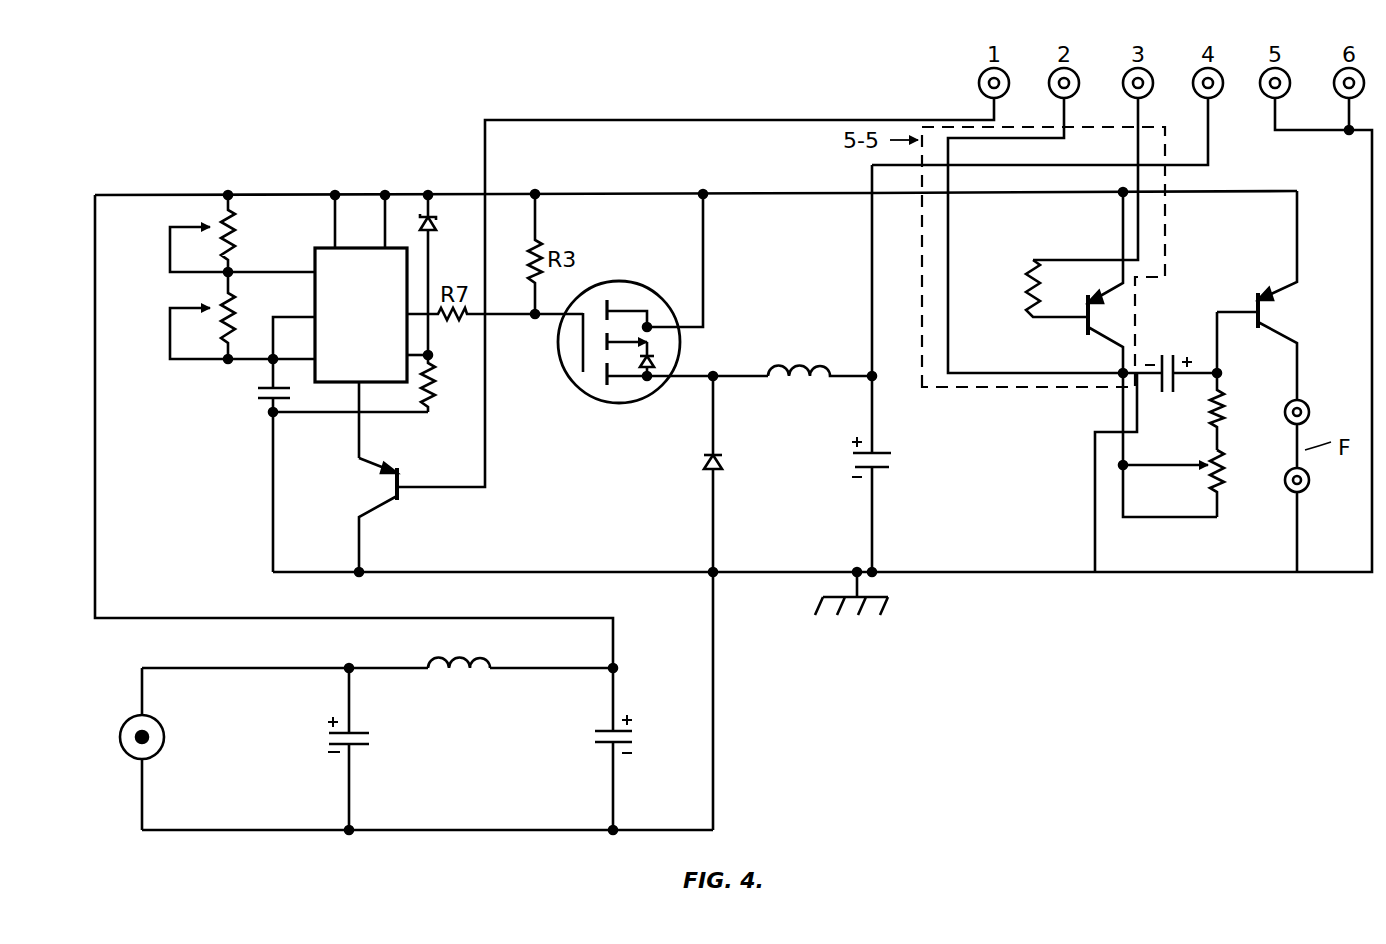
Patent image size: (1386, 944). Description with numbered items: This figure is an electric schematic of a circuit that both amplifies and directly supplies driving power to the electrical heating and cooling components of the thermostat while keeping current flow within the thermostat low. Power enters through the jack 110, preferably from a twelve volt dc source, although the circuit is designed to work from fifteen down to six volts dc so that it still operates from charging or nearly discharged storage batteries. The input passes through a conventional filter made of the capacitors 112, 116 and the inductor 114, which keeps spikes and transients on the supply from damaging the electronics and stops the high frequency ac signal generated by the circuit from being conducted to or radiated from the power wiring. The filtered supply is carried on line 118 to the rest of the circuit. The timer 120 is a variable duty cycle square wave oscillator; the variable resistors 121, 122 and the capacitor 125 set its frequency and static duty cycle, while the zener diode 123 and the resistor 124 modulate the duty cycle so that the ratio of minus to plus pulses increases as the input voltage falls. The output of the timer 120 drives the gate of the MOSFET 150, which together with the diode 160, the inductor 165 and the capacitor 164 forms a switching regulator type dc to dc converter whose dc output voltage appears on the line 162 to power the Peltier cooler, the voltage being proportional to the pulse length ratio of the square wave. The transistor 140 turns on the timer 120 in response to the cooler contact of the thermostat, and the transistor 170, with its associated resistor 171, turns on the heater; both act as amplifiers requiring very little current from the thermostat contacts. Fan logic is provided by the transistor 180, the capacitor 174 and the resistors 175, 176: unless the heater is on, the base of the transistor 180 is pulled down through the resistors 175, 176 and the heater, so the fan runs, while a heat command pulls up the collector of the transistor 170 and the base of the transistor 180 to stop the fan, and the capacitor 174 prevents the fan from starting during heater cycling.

The jack 110 is at (120, 745).
The capacitor 112 is at (335, 756).
The inductor 114 is at (456, 673).
The capacitor 116 is at (640, 736).
The supply line 118 is at (187, 196).
The timer 120 is at (361, 326).
The variable resistor 121 is at (170, 247).
The variable resistor 122 is at (165, 340).
The zener diode 123 is at (432, 233).
The resistor 124 is at (438, 406).
The capacitor 125 is at (263, 415).
The transistor 140 is at (385, 508).
The MOSFET 150 is at (610, 401).
The diode 160 is at (719, 457).
The line 162 is at (872, 268).
The capacitor 164 is at (884, 472).
The inductor 165 is at (788, 381).
The transistor 170 is at (1084, 327).
The resistor R4 171 is at (1040, 298).
The capacitor 174 is at (1164, 396).
The resistor 175 is at (1228, 473).
The resistor 176 is at (1228, 405).
The transistor 180 is at (1276, 313).